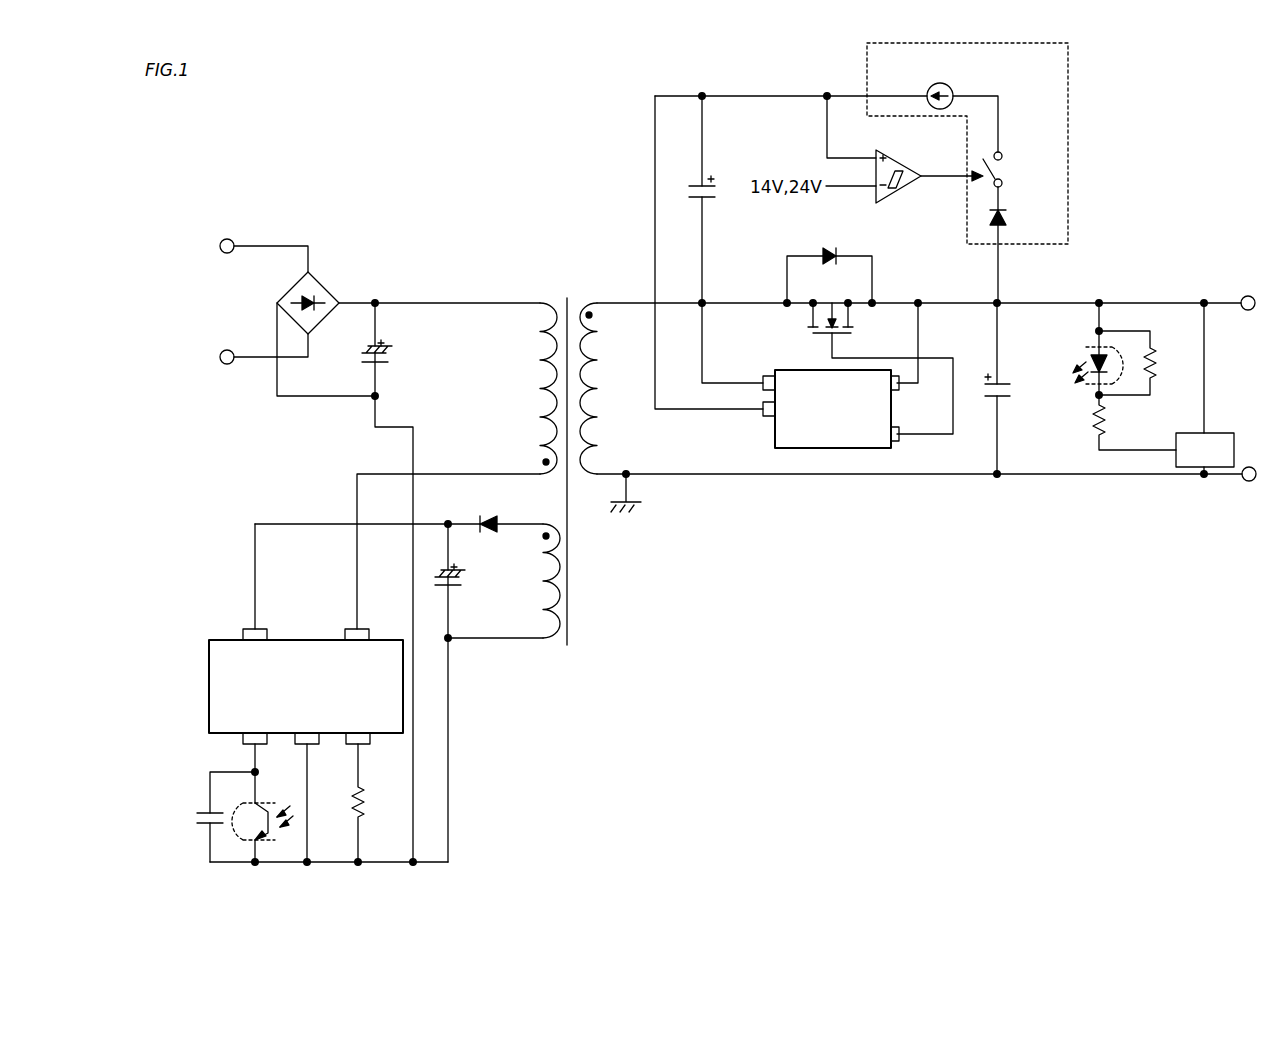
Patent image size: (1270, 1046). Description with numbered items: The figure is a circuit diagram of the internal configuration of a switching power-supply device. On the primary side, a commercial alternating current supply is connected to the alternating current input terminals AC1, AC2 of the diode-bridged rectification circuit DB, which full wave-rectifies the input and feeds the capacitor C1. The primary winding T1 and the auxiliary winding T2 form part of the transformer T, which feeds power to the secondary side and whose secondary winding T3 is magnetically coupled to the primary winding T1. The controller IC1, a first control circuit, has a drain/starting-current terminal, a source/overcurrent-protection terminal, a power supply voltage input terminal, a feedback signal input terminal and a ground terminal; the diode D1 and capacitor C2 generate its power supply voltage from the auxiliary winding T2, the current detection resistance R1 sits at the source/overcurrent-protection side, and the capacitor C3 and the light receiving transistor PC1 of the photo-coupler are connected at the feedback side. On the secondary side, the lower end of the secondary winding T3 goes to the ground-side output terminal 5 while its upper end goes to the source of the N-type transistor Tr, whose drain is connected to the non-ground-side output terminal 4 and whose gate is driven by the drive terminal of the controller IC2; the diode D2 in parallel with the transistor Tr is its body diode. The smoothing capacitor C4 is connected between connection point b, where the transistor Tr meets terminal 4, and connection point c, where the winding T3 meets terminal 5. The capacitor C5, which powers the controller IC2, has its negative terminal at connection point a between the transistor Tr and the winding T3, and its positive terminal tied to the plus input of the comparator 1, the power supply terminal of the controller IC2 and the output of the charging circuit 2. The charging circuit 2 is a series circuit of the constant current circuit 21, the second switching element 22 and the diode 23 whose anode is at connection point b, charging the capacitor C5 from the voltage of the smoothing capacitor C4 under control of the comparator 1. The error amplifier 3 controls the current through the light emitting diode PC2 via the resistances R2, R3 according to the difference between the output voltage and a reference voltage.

The alternating current input terminal AC1 is at (227, 239).
The alternating current input terminal AC2 is at (227, 350).
The rectification circuit DB is at (317, 281).
The capacitor C1 is at (362, 351).
The transformer T is at (567, 290).
The primary winding T1 is at (555, 406).
The auxiliary winding T2 is at (552, 598).
The secondary winding T3 is at (580, 373).
The diode D1 is at (489, 514).
The capacitor C2 is at (435, 574).
The controller IC1 is at (209, 691).
The capacitor C3 is at (201, 812).
The light receiving transistor PC1 is at (242, 845).
The current detection resistance R1 is at (366, 800).
The capacitor C5 is at (692, 185).
The comparator 1 is at (893, 152).
The constant current circuit 21 is at (950, 86).
The second switching element 22 is at (1004, 170).
The diode 23 is at (1010, 215).
The charging circuit 2 is at (1069, 146).
The diode D2 is at (837, 247).
The connection point a is at (704, 301).
The connection point b is at (1003, 301).
The connection point c is at (1003, 472).
The N-type transistor Tr is at (822, 335).
The controller IC2 is at (848, 450).
The smoothing capacitor C4 is at (1002, 384).
The light emitting diode PC2 is at (1084, 342).
The resistance R3 is at (1156, 366).
The resistance R2 is at (1106, 420).
The error amplifier 3 is at (1185, 433).
The non-ground-side output terminal 4 is at (1246, 296).
The ground-side output terminal 5 is at (1249, 467).